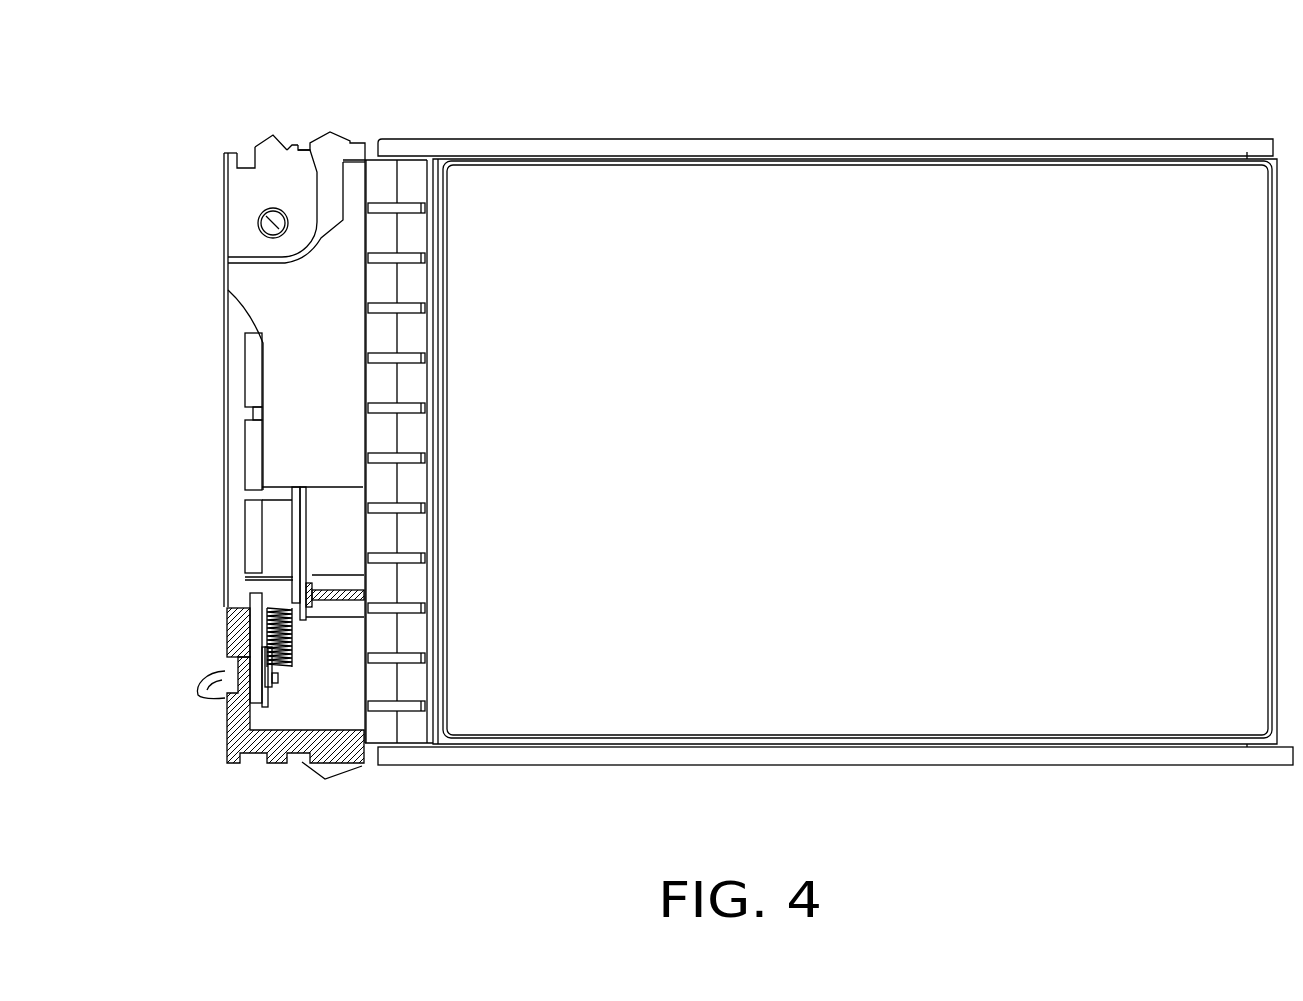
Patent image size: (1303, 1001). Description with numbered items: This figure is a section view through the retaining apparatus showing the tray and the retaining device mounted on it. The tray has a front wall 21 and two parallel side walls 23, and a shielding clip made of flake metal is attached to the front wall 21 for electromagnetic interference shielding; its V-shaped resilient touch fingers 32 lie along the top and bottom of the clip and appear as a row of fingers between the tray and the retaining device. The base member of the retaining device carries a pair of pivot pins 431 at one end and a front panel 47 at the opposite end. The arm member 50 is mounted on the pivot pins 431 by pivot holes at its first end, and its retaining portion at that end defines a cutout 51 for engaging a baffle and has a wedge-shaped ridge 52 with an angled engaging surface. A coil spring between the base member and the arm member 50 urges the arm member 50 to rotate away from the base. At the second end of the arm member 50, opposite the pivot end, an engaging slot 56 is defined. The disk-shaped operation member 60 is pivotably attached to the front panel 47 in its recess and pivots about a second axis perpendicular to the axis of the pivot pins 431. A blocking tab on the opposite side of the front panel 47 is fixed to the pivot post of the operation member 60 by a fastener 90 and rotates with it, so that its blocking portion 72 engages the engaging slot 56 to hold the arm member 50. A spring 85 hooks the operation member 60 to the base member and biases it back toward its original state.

The front wall 21 is at (443, 708).
The side wall 23 is at (592, 748).
The V-shaped resilient touch finger 32 is at (410, 732).
The front panel 47 is at (228, 743).
The arm member 50 is at (240, 406).
The cutout 51 is at (252, 150).
The wedge-shaped ridge 52 is at (272, 140).
The engaging slot 56 is at (250, 600).
The operation member 60 is at (217, 703).
The blocking portion 72 is at (228, 640).
The spring 85 is at (267, 632).
The fastener 90 is at (276, 683).
The pivot pin 431 is at (260, 218).